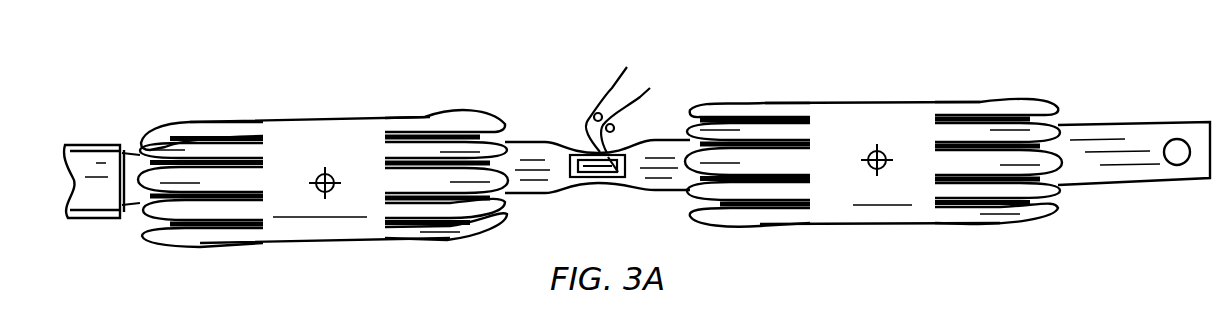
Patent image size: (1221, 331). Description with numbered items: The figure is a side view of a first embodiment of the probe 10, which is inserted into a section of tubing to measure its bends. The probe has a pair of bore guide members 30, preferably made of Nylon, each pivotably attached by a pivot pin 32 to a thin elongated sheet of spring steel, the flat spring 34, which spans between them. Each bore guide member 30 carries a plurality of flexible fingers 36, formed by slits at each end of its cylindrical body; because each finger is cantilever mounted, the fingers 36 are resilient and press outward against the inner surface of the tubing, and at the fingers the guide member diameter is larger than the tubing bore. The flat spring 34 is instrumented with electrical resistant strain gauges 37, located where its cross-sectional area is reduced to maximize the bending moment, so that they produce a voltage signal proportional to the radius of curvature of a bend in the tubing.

The electrical contact assembly 10 is at (349, 72).
The bore guide member 30 is at (218, 122).
The pivot pin 32 is at (336, 188).
The flat spring 34 is at (530, 140).
The flexible finger 36 is at (145, 138).
The strain gauge 37 is at (602, 178).